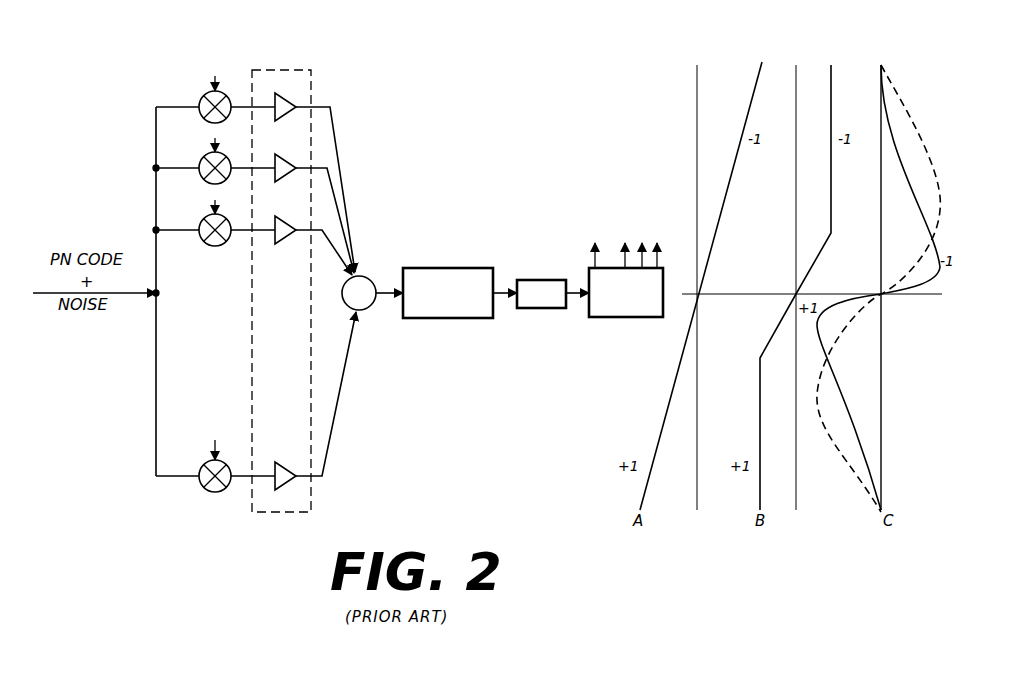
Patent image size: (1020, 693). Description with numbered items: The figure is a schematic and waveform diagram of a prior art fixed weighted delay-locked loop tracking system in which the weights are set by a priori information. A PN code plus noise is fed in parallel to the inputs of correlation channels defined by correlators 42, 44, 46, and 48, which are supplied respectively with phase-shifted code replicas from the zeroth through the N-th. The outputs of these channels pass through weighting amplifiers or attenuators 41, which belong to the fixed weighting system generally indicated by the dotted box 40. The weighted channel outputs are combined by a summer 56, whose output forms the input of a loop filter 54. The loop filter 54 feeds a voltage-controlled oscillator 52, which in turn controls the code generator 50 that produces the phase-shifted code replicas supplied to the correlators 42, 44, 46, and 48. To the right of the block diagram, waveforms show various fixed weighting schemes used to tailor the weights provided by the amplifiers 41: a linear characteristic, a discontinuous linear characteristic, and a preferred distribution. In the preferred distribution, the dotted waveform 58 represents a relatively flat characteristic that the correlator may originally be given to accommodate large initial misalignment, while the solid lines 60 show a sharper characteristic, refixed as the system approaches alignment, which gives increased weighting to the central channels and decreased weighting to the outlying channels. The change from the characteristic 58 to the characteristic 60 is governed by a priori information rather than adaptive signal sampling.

The fixed weighting system 40 is at (282, 70).
The weighting amplifiers or attenuators 41 is at (290, 108).
The correlator 42 is at (205, 93).
The correlator 44 is at (205, 155).
The correlator 46 is at (205, 217).
The correlator 48 is at (205, 462).
The code generator 50 is at (630, 317).
The voltage-controlled oscillator 52 is at (537, 308).
The loop filter 54 is at (447, 318).
The summer 56 is at (365, 310).
The dotted waveform 58 is at (840, 441).
The solid line characteristic 60 is at (850, 369).